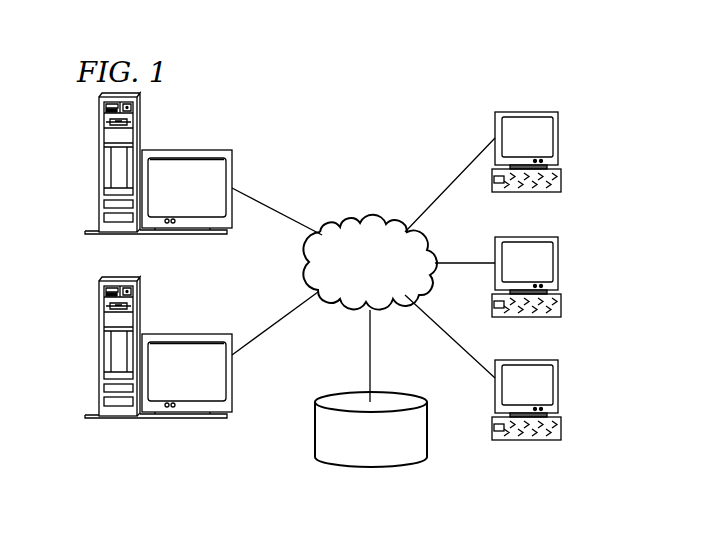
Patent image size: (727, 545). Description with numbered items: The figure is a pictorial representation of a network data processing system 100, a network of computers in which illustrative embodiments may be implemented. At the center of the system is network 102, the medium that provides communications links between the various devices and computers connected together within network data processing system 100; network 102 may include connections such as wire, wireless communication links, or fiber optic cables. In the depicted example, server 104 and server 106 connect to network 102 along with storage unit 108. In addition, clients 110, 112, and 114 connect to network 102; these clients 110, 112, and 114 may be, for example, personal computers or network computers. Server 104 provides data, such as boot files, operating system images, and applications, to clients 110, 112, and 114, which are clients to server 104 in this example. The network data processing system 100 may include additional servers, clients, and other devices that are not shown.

The network data processing system 100 is at (416, 117).
The network 102 is at (345, 220).
The server 104 is at (102, 165).
The server 106 is at (102, 346).
The storage unit 108 is at (357, 465).
The client 110 is at (558, 138).
The client 112 is at (558, 263).
The client 114 is at (558, 387).